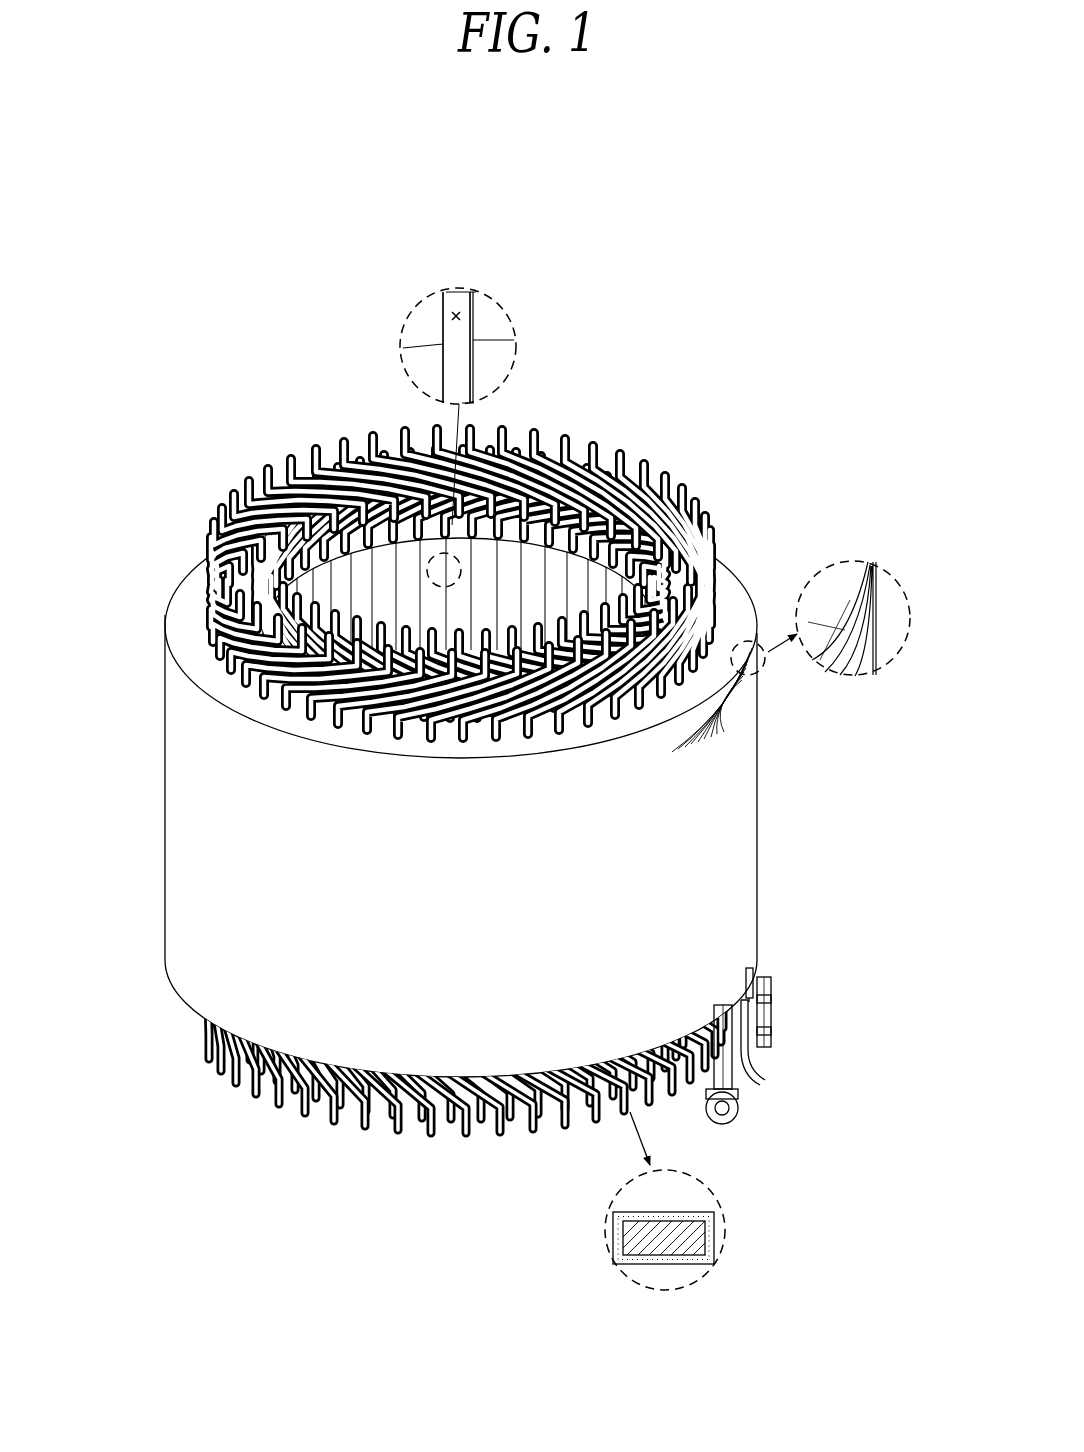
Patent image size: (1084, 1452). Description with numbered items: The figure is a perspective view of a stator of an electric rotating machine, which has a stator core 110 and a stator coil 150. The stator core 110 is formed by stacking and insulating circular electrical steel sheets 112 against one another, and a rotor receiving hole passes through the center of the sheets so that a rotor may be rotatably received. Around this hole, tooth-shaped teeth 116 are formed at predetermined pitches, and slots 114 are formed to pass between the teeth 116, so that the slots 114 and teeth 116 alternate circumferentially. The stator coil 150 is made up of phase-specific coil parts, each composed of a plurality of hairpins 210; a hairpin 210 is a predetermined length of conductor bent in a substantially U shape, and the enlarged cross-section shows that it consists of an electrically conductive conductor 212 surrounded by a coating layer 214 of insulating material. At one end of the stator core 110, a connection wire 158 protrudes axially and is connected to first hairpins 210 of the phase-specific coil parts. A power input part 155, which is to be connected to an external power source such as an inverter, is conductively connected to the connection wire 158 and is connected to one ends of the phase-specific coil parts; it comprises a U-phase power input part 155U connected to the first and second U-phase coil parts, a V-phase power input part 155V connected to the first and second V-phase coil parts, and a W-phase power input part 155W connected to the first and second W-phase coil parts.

The stator core 110 is at (160, 780).
The electrical steel sheets 112 is at (870, 613).
The slots 114 is at (456, 312).
The teeth 116 is at (503, 310).
The stator coil 150 is at (230, 484).
The power input part 155 is at (819, 1015).
The U-phase power input part 155U is at (775, 1020).
The V-phase power input part 155V is at (804, 1042).
The W-phase power input part 155W is at (760, 968).
The connection wire 158 is at (745, 1105).
The hairpin 210 is at (674, 1255).
The conductor 212 is at (668, 1238).
The coating layer 214 is at (636, 1256).